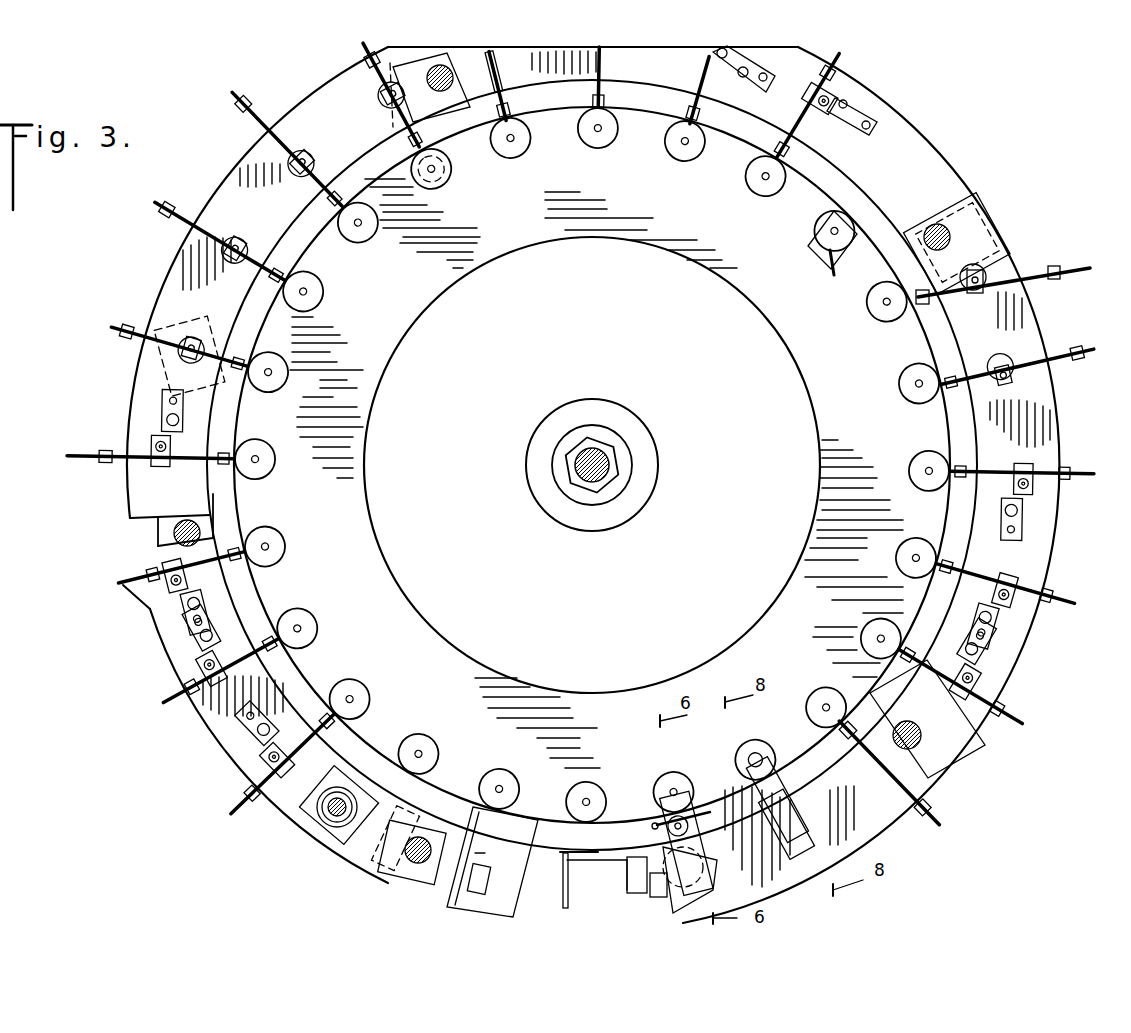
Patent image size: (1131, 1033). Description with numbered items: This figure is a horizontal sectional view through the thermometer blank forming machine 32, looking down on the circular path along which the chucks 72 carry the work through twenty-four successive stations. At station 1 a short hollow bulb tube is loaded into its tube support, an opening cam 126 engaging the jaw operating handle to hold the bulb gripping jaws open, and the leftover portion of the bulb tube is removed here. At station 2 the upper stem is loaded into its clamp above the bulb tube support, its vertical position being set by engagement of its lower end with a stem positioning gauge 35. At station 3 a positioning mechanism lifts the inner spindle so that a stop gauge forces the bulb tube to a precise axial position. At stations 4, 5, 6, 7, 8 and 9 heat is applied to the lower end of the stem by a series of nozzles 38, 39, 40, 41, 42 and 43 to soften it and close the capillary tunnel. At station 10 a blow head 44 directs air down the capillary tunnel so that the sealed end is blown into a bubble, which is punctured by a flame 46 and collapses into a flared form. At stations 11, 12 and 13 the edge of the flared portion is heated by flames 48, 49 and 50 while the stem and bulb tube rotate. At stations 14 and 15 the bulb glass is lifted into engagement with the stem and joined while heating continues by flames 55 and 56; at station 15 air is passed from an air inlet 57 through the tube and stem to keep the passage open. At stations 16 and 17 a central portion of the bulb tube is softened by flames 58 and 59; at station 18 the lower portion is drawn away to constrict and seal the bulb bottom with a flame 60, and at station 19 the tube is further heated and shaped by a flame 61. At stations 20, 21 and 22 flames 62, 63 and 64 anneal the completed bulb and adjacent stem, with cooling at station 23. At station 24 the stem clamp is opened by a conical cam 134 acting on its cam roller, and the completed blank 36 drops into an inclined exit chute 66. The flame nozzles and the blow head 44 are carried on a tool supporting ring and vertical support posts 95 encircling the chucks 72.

The station 1 is at (586, 781).
The station 2 is at (664, 766).
The station 3 is at (734, 738).
The station 4 is at (798, 696).
The station 5 is at (845, 629).
The station 6 is at (870, 560).
The station 7 is at (883, 484).
The station 8 is at (874, 404).
The station 9 is at (839, 329).
The station 10 is at (899, 215).
The station 11 is at (737, 223).
The station 12 is at (670, 191).
The station 13 is at (597, 183).
The station 14 is at (517, 189).
The station 15 is at (442, 219).
The station 16 is at (380, 263).
The station 17 is at (332, 326).
The station 18 is at (300, 398).
The station 19 is at (286, 473).
The station 20 is at (300, 549).
The station 21 is at (329, 621).
The station 22 is at (375, 688).
The station 23 is at (429, 727).
The station 24 is at (509, 764).
The machine 32 is at (1024, 250).
The stem positioning gauge 35 is at (697, 807).
The completed blank 36 is at (739, 835).
The nozzle 38 is at (892, 744).
The nozzle 39 is at (930, 663).
The nozzle 40 is at (973, 577).
The nozzle 41 is at (998, 467).
The nozzle 42 is at (980, 380).
The nozzle 43 is at (955, 297).
The blow head 44 is at (805, 232).
The flame 46 is at (868, 194).
The flame 48 is at (787, 145).
The flame 49 is at (700, 108).
The flame 50 is at (605, 92).
The flame 55 is at (507, 112).
The flame 56 is at (415, 127).
The air inlet 57 is at (453, 168).
The flame 58 is at (327, 178).
The flame 59 is at (257, 250).
The flame 60 is at (242, 350).
The flame 61 is at (223, 440).
The flame 62 is at (248, 543).
The flame 63 is at (280, 620).
The flame 64 is at (337, 698).
The exit chute 66 is at (510, 843).
The chuck 72 is at (531, 146).
The vertical support post 95 is at (427, 837).
The opening cam 126 is at (613, 865).
The conical cam 134 is at (460, 870).